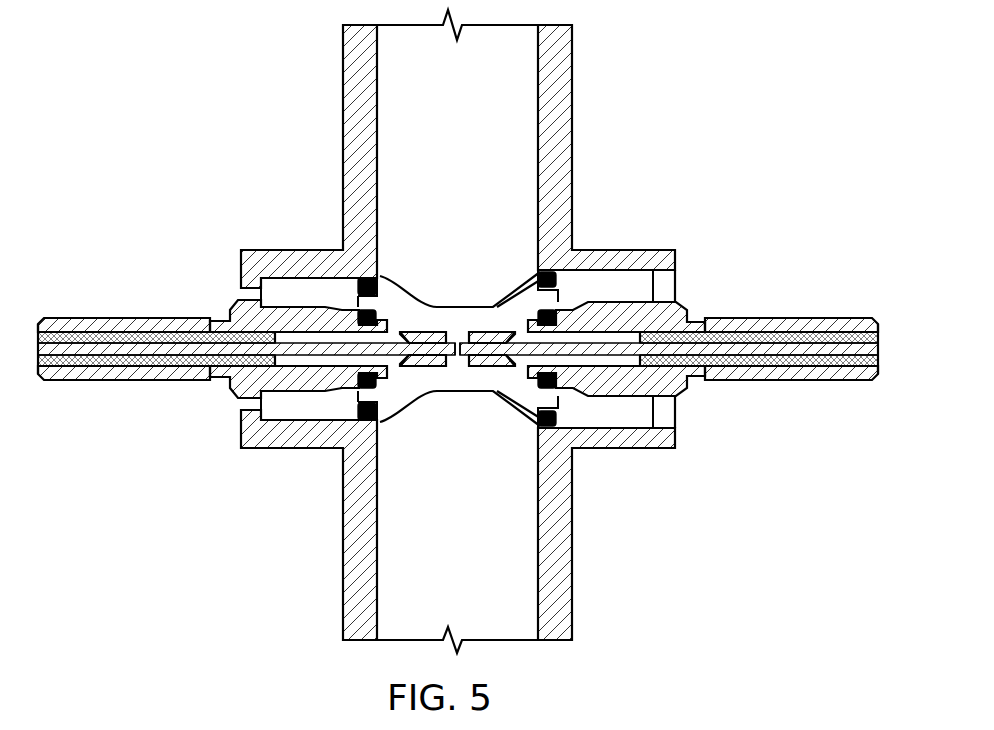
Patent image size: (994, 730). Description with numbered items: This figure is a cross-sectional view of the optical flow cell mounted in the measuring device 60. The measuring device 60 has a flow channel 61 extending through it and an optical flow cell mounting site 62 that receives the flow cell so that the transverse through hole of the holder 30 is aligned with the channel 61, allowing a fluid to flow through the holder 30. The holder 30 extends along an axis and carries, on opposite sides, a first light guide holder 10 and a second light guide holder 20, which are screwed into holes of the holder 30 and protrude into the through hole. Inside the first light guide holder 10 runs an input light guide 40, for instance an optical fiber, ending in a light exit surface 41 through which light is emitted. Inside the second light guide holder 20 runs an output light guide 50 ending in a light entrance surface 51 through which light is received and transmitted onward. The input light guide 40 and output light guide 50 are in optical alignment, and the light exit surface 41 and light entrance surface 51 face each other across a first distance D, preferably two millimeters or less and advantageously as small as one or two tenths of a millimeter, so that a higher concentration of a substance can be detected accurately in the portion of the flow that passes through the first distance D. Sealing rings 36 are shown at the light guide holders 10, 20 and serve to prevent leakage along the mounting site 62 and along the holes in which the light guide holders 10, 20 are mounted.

The first light guide holder 10 is at (831, 394).
The second light guide holder 20 is at (136, 386).
The holder 30 is at (601, 286).
The sealing rings 36 is at (360, 316).
The input light guide 40 is at (880, 336).
The light exit surface 41 is at (461, 341).
The output light guide 50 is at (130, 346).
The light entrance surface 51 is at (454, 341).
The measuring device 60 is at (492, 331).
The flow channel 61 is at (403, 116).
The optical flow cell mounting site 62 is at (683, 277).
The first distance D is at (457, 364).